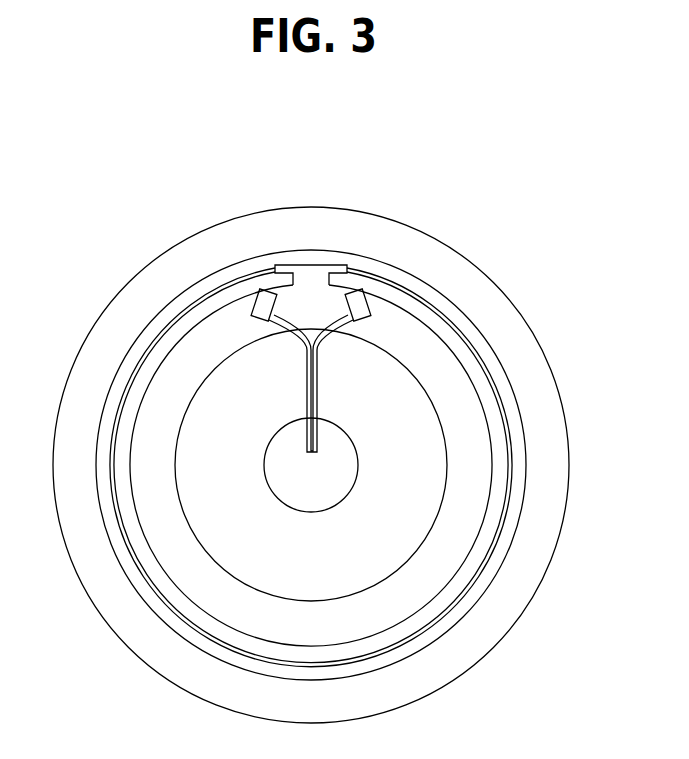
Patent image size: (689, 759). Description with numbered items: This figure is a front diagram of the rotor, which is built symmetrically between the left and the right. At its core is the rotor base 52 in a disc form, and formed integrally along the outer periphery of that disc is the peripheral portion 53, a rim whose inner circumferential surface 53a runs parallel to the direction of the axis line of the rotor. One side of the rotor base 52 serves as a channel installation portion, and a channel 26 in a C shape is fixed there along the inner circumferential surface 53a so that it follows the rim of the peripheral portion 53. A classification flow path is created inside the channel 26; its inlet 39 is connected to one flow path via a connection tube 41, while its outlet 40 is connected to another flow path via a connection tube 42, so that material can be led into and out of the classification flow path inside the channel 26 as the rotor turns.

The channel 26 is at (442, 327).
The inlet 39 is at (263, 307).
The outlet 40 is at (356, 305).
The connection tube 41 is at (293, 330).
The connection tube 42 is at (327, 330).
The rotor base 52 is at (218, 408).
The peripheral portion 53 is at (433, 260).
The inner circumferential surface 53a is at (118, 411).